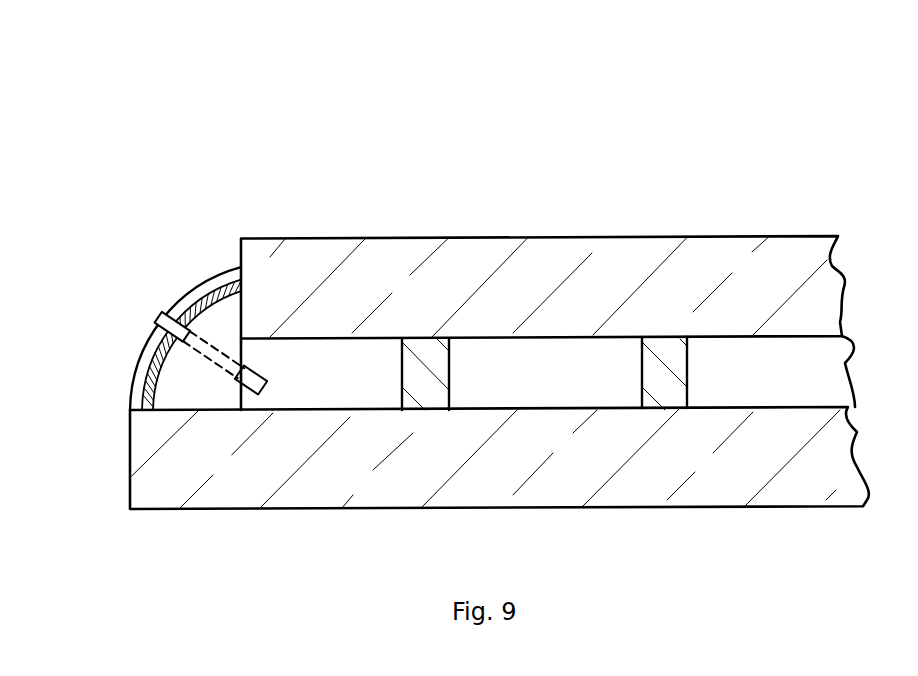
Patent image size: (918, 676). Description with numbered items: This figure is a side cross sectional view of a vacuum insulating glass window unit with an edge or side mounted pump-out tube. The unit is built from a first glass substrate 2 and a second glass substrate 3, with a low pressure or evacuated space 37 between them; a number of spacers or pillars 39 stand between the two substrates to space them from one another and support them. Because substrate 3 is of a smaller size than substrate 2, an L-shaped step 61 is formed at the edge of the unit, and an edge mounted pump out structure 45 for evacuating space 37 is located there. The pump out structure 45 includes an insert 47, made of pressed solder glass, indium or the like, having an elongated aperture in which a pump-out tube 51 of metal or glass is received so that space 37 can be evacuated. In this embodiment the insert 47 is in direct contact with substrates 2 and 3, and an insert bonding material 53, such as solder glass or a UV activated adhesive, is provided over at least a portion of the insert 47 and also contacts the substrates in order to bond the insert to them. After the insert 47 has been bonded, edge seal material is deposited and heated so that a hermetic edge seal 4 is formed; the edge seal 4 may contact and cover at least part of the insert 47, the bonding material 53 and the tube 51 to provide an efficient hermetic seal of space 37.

The first glass substrate 2 is at (735, 490).
The second glass substrate 3 is at (718, 266).
The edge seal 4 is at (204, 290).
The low pressure space 37 is at (565, 375).
The spacers/pillars 39 is at (402, 376).
The edge mounted pump out structure 45 is at (183, 276).
The insert 47 is at (195, 378).
The pump-out tube 51 is at (178, 300).
The insert bonding material 53 is at (222, 275).
The L-shaped step 61 is at (202, 178).